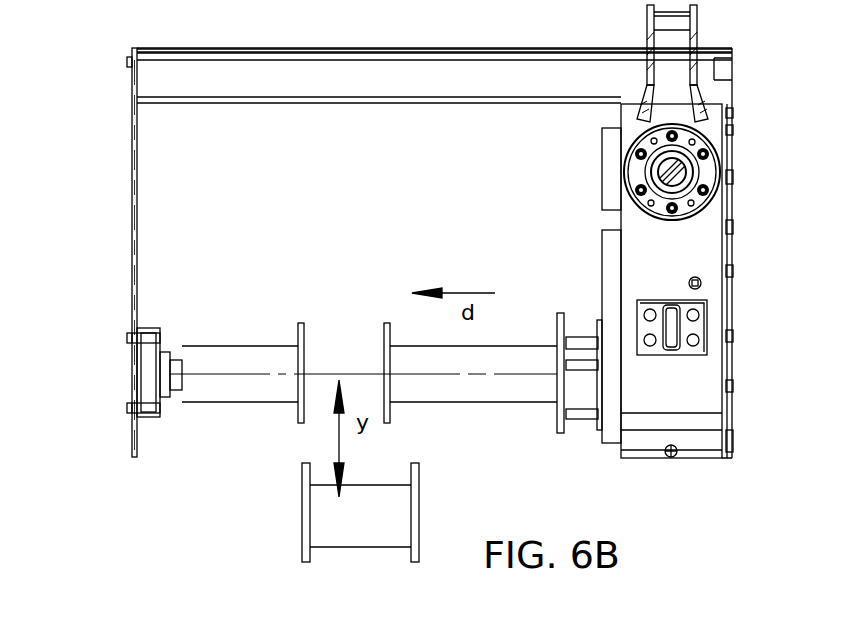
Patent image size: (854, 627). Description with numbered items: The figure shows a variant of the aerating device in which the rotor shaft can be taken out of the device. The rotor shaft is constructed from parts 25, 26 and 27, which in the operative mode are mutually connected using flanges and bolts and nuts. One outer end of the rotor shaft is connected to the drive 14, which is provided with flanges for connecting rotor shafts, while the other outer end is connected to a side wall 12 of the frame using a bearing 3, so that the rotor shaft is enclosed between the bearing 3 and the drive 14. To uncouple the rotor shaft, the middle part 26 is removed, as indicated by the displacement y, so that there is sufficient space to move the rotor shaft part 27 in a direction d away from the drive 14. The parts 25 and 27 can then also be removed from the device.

The side wall 12 is at (133, 190).
The drive 14 is at (688, 242).
The bearing 3 is at (150, 377).
The rotor shaft part 25 is at (251, 357).
The rotor shaft part 27 is at (515, 353).
The middle part 26 is at (333, 515).